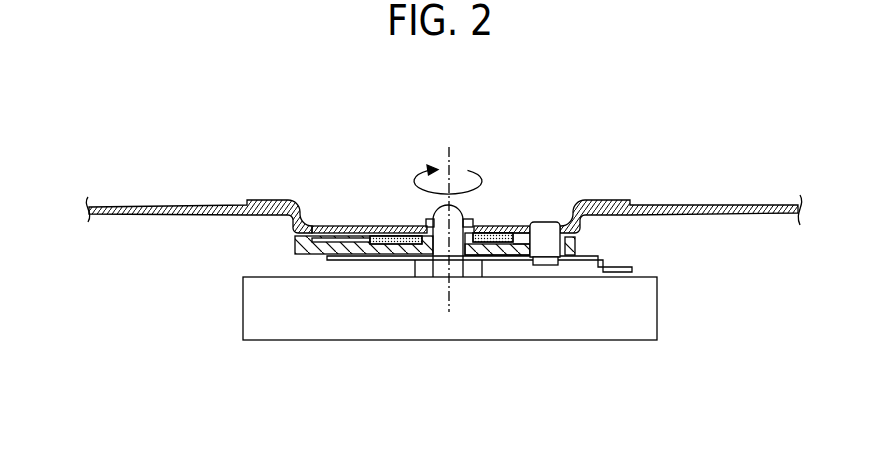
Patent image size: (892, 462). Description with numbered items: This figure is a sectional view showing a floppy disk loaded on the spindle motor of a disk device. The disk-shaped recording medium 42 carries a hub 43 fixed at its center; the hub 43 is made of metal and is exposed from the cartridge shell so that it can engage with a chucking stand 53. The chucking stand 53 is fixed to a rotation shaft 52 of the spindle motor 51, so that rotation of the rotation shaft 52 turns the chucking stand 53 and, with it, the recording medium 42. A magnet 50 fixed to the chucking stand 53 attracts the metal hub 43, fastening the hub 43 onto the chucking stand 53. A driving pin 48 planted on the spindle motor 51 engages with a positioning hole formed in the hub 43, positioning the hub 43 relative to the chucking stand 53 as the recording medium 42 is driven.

The recording medium 42 is at (745, 215).
The hub 43 is at (335, 227).
The driving pin 48 is at (557, 222).
The magnet 50 is at (495, 235).
The spindle motor 51 is at (510, 333).
The rotation shaft 52 is at (442, 272).
The chucking stand 53 is at (295, 248).